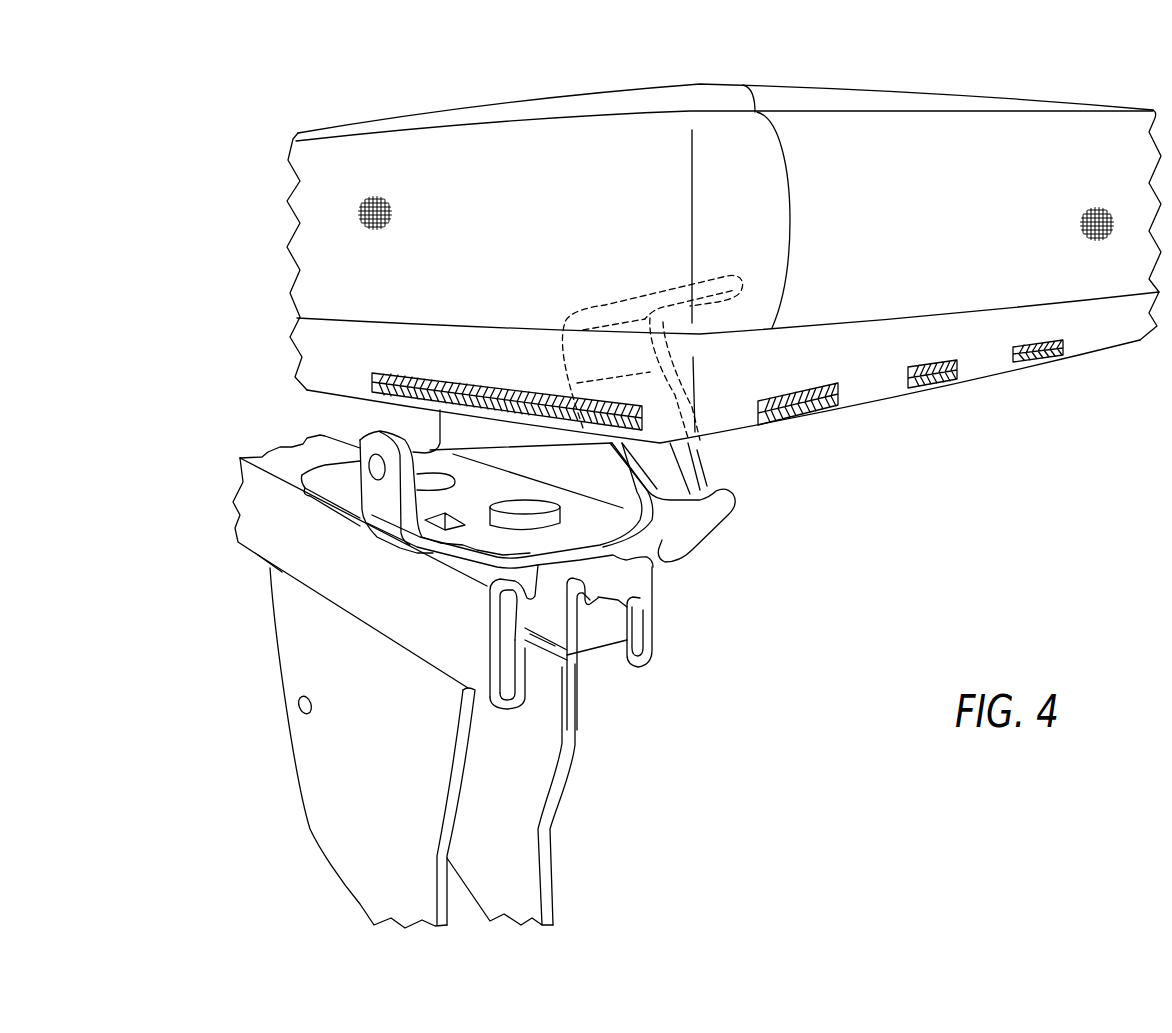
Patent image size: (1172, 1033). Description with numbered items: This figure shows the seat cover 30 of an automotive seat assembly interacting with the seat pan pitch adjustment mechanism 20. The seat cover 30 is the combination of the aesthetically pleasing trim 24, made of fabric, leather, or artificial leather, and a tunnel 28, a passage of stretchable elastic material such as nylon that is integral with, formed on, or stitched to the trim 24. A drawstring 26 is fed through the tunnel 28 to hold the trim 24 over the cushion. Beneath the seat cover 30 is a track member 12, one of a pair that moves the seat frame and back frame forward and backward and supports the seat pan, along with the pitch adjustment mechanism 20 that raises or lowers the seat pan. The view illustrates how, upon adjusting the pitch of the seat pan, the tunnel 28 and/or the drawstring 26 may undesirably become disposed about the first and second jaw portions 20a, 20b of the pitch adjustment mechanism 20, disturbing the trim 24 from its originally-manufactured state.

The track member 12 is at (295, 541).
The seat pan pitch adjustment mechanism 20 is at (576, 502).
The first jaw portion 20a is at (667, 540).
The second jaw portion 20b is at (725, 462).
The aesthetically-pleasing trim 24 is at (917, 236).
The drawstring 26 is at (800, 404).
The tunnel 28 is at (862, 368).
The seat cover 30 is at (724, 268).